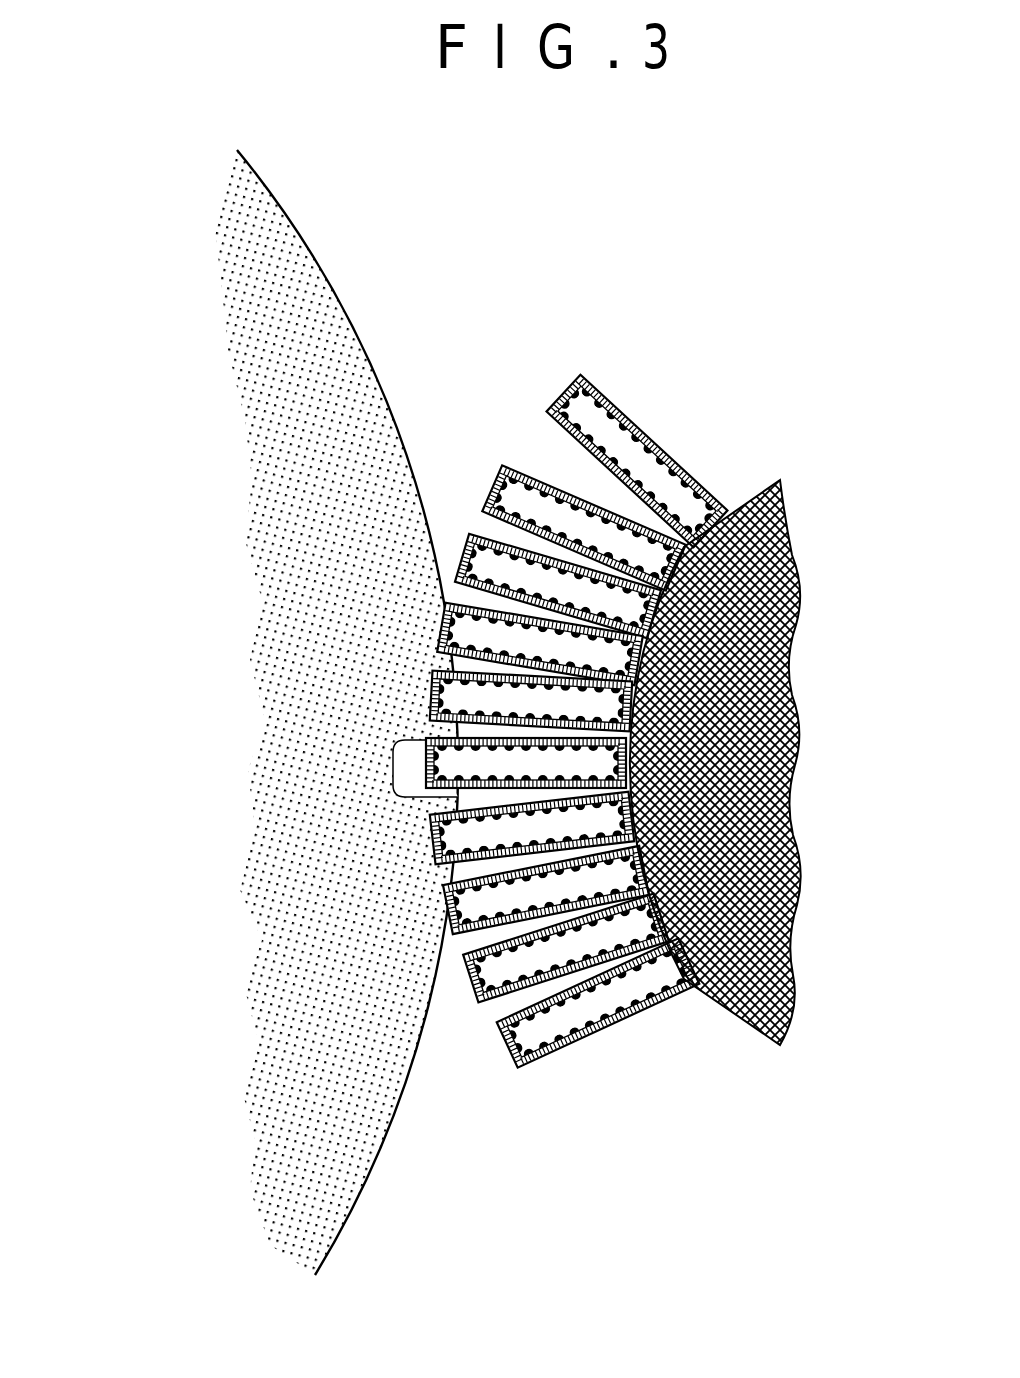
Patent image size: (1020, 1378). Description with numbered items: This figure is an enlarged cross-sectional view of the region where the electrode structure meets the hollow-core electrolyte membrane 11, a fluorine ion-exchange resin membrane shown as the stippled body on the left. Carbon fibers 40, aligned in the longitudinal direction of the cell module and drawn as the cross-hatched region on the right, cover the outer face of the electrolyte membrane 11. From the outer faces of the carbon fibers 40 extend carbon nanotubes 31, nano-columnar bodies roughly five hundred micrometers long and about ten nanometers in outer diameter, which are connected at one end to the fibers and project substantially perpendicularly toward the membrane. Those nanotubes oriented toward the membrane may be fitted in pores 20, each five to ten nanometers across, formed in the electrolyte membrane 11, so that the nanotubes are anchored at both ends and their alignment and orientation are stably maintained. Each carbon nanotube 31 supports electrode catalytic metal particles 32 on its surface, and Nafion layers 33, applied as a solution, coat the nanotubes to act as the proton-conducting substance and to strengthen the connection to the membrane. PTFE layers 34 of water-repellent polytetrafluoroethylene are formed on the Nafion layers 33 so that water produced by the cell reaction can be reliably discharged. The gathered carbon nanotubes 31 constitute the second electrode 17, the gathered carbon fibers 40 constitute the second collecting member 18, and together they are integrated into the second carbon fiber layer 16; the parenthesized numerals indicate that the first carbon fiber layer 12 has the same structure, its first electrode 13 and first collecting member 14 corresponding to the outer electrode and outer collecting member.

The hollow-core electrolyte membrane 11 is at (383, 393).
The first carbon fiber layer 12 is at (798, 1233).
The first electrode 13 is at (682, 1196).
The first collecting member 14 is at (782, 1196).
The second carbon fiber layer 16 is at (612, 1261).
The second electrode 17 is at (562, 1206).
The second collecting member 18 is at (748, 1206).
The pores 20 is at (436, 767).
The carbon nanotubes 31 is at (667, 973).
The electrode catalytic metal particles 32 is at (600, 1030).
The Nafion layers 33 is at (603, 1013).
The PTFE layers 34 is at (658, 970).
The carbon fibers 40 is at (780, 480).